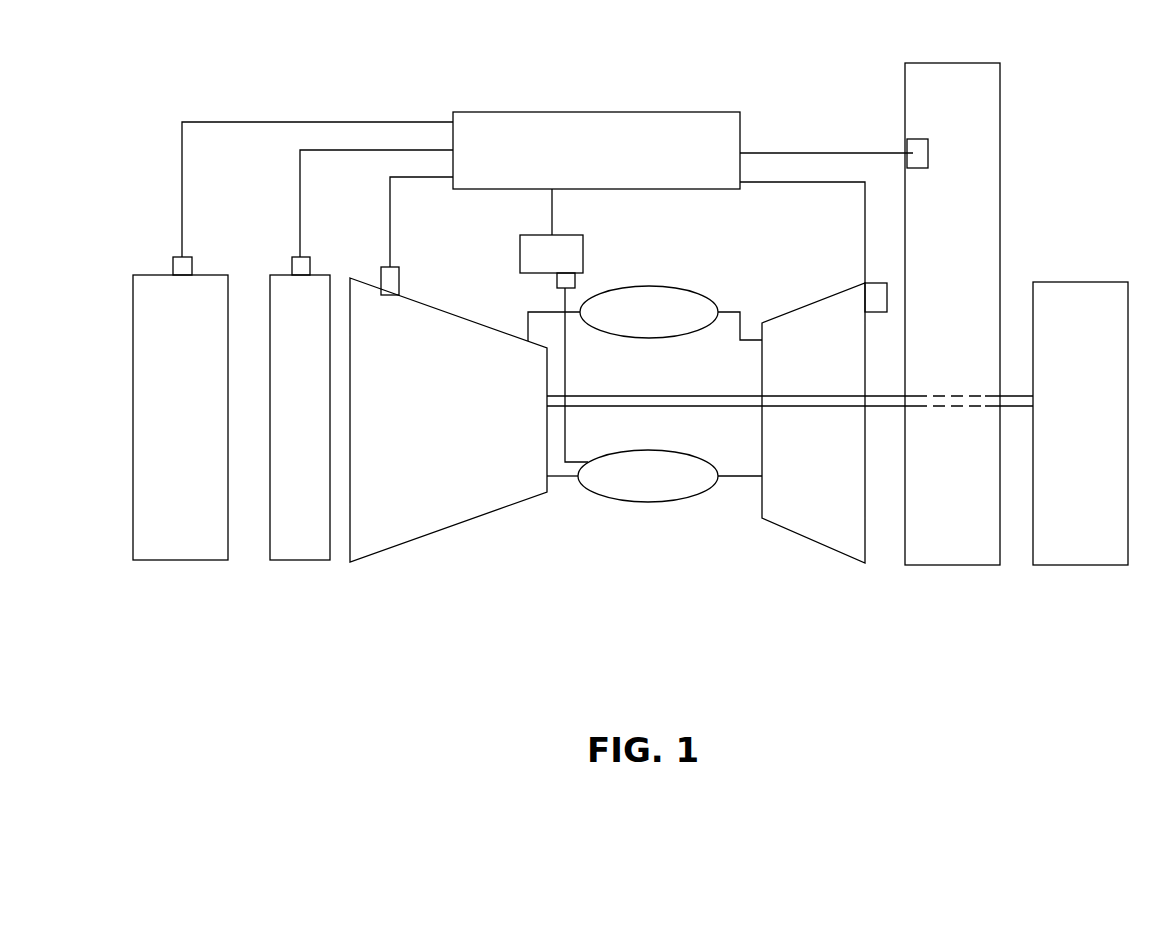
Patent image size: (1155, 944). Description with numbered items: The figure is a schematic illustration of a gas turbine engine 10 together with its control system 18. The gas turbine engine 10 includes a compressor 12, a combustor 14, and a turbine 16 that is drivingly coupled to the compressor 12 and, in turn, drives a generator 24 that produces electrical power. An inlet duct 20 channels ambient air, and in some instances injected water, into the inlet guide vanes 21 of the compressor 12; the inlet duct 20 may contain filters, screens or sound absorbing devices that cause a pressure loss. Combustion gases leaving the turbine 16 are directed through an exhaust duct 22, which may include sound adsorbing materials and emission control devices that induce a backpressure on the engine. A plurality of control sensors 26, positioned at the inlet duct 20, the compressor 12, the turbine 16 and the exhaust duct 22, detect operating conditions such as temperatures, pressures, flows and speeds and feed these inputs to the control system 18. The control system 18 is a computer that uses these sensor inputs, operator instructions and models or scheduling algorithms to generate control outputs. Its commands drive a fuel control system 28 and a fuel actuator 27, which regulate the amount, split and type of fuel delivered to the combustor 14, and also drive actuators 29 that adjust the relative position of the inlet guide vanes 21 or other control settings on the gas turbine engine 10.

The gas turbine engine 10 is at (691, 439).
The compressor 12 is at (415, 541).
The combustor 14 is at (668, 287).
The turbine 16 is at (791, 446).
The control system 18 is at (650, 112).
The inlet duct 20 is at (182, 560).
The inlet guide vanes 21 is at (300, 560).
The exhaust duct 22 is at (950, 565).
The generator 24 is at (1078, 565).
The control sensors 26 is at (930, 100).
The fuel actuator 27 is at (556, 284).
The fuel control system 28 is at (520, 255).
The actuators 29 is at (305, 257).